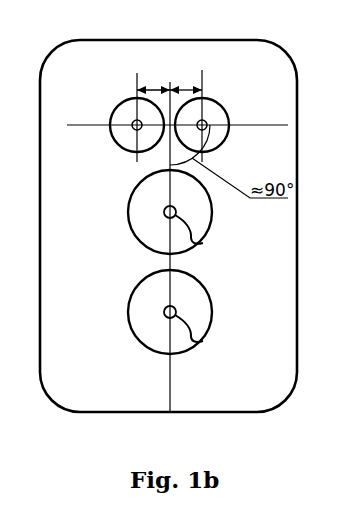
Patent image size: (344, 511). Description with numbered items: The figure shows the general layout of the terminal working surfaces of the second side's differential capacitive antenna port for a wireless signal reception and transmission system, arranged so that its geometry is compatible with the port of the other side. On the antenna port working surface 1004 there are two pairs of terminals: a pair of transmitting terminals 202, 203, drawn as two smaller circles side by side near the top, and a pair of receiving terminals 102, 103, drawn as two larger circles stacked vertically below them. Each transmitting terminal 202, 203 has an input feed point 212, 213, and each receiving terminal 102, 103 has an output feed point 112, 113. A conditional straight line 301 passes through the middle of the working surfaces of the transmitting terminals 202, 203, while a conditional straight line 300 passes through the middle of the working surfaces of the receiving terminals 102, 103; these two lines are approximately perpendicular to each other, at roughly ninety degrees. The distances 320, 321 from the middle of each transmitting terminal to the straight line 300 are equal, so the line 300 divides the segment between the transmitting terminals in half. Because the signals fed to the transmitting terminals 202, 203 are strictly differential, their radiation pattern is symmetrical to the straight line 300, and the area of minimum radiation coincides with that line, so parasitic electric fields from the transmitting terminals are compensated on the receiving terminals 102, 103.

The antenna port working surface 1004 is at (40, 255).
The conditional straight line 301 is at (248, 117).
The conditional straight line 300 is at (170, 380).
The transmitting terminal 202 is at (118, 106).
The transmitting terminal 203 is at (221, 106).
The input feed point 212 is at (117, 146).
The input feed point 213 is at (221, 144).
The distance 320 is at (150, 89).
The distance 321 is at (189, 89).
The receiving terminal 102 is at (128, 232).
The receiving terminal 103 is at (130, 323).
The output feed point 112 is at (203, 240).
The output feed point 113 is at (203, 338).